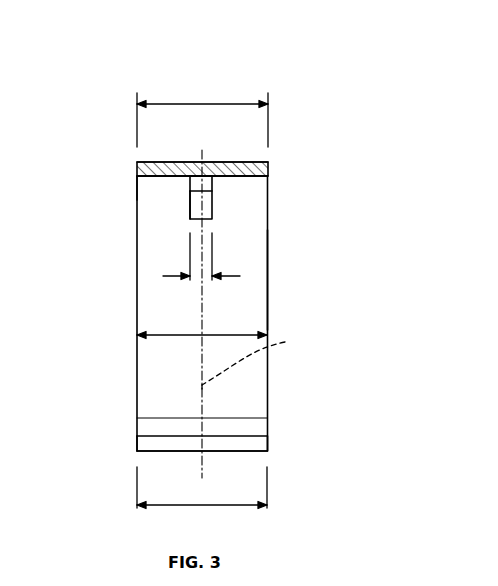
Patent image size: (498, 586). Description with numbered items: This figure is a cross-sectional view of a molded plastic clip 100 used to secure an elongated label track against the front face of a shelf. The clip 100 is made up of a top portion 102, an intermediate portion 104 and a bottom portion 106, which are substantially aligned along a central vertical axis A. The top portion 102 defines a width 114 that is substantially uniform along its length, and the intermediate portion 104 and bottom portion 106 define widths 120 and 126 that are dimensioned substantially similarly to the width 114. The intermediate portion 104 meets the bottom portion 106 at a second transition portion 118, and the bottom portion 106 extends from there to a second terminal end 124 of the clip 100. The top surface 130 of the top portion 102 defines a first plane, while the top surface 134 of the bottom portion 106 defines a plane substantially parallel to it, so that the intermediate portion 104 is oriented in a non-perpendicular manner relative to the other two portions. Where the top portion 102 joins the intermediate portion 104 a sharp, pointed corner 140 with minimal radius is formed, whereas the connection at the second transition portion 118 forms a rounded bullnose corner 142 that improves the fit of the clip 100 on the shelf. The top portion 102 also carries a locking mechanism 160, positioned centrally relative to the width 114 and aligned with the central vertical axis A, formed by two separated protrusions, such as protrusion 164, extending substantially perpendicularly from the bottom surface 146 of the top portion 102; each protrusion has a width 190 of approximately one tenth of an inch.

The clip 100 is at (264, 62).
The top portion 102 is at (165, 156).
The intermediate portion 104 is at (316, 272).
The bottom portion 106 is at (283, 440).
The width 114 is at (180, 104).
The second transition portion 118 is at (267, 427).
The width 120 is at (228, 335).
The second terminal end 124 is at (137, 443).
The width 126 is at (162, 505).
The top surface 130 is at (237, 162).
The top surface 134 is at (217, 451).
The sharp corner 140 is at (144, 186).
The rounded corner 142 is at (147, 428).
The bottom surface 146 is at (250, 176).
The locking mechanism 160 is at (176, 202).
The protrusion 164 is at (212, 212).
The width 190 is at (223, 271).
The central vertical axis A is at (251, 361).